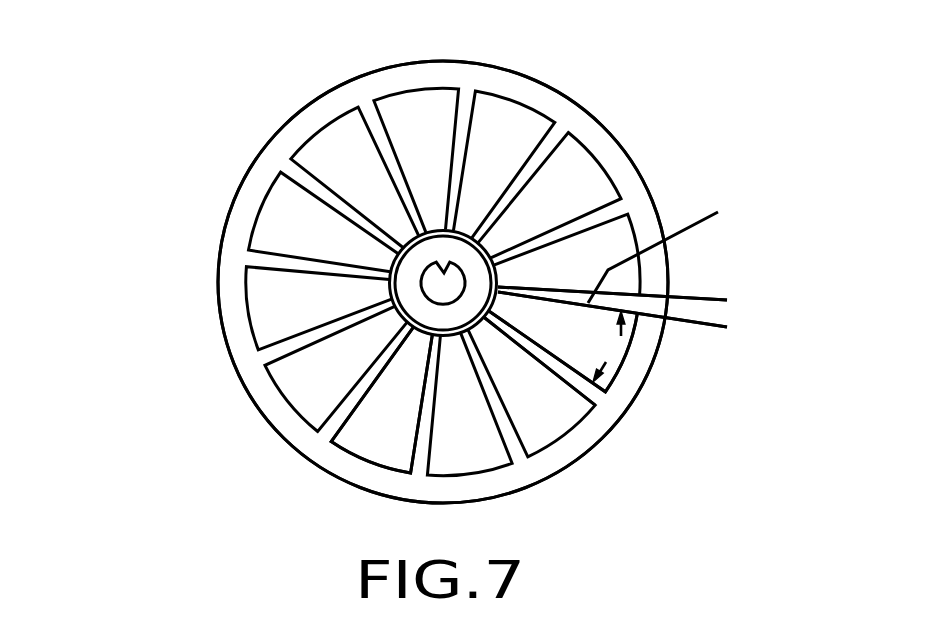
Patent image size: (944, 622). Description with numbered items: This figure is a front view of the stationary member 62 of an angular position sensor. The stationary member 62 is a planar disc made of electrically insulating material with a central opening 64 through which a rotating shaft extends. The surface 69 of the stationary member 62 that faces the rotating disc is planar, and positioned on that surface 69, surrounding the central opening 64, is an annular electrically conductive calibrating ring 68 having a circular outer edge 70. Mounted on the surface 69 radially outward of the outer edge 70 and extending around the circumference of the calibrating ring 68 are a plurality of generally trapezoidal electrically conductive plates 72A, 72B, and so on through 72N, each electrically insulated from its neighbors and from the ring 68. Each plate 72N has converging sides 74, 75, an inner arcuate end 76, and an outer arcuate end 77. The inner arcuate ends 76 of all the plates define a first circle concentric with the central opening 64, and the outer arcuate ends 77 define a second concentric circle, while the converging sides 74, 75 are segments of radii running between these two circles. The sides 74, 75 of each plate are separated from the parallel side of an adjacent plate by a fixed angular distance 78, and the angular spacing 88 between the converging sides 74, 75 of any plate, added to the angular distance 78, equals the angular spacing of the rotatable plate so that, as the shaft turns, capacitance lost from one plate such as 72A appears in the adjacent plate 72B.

The stationary member 62 is at (622, 141).
The central opening 64 is at (443, 268).
The calibrating ring 68 is at (407, 262).
The surface 69 is at (541, 94).
The outer edge 70 is at (390, 287).
The electrically conductive plate 72A is at (282, 400).
The electrically conductive plate 72B is at (348, 455).
The electrically conductive plate 72N is at (618, 377).
The converging side 74 is at (671, 247).
The converging side 75 is at (490, 310).
The inner arcuate end 76 is at (495, 317).
The outer arcuate end 77 is at (633, 352).
The angular distance 78 is at (720, 262).
The angular spacing 88 is at (611, 346).